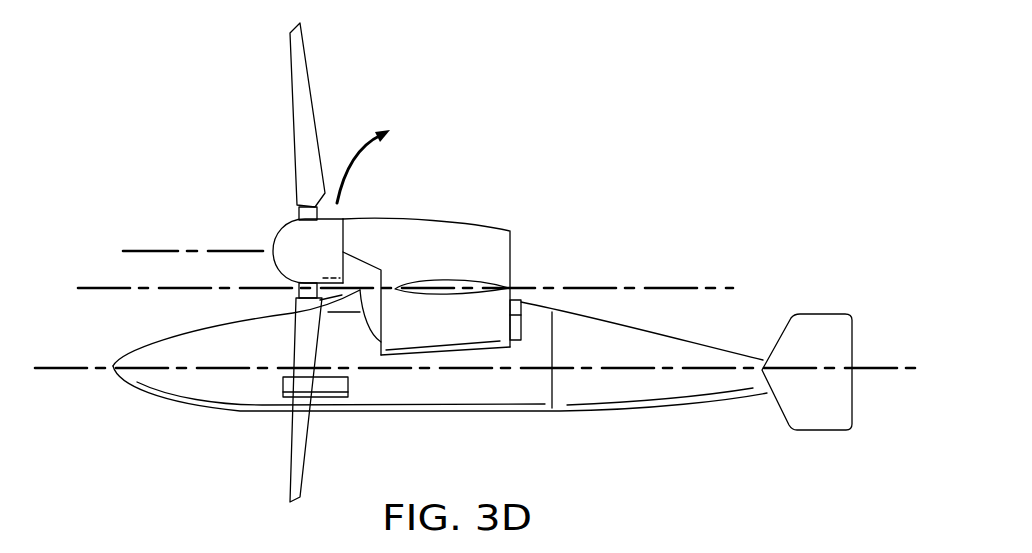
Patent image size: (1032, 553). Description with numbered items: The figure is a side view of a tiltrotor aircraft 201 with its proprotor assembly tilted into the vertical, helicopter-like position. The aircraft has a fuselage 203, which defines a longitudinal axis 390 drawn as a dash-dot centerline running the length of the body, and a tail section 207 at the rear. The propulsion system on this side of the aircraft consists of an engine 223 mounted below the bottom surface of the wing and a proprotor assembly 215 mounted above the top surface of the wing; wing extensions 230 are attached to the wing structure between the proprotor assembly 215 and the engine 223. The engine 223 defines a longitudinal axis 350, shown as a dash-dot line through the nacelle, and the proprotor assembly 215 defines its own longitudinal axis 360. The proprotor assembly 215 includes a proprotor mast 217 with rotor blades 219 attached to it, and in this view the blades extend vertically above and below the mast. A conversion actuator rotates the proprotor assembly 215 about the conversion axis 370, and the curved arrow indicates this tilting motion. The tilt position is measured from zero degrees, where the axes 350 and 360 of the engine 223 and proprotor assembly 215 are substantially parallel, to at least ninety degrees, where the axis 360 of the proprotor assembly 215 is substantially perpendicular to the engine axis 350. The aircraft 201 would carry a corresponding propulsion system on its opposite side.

The tiltrotor aircraft 201 is at (192, 62).
The fuselage 203 is at (142, 393).
The tail section 207 is at (853, 403).
The proprotor assembly 215 is at (403, 217).
The proprotor mast 217 is at (273, 238).
The rotor blades 219 is at (310, 73).
The engine 223 is at (445, 355).
The wing extensions 230 is at (450, 278).
The longitudinal axis of engine 350 is at (100, 290).
The longitudinal axis of proprotor assembly 360 is at (132, 248).
The conversion axis 370 is at (297, 350).
The longitudinal axis of fuselage 390 is at (52, 370).